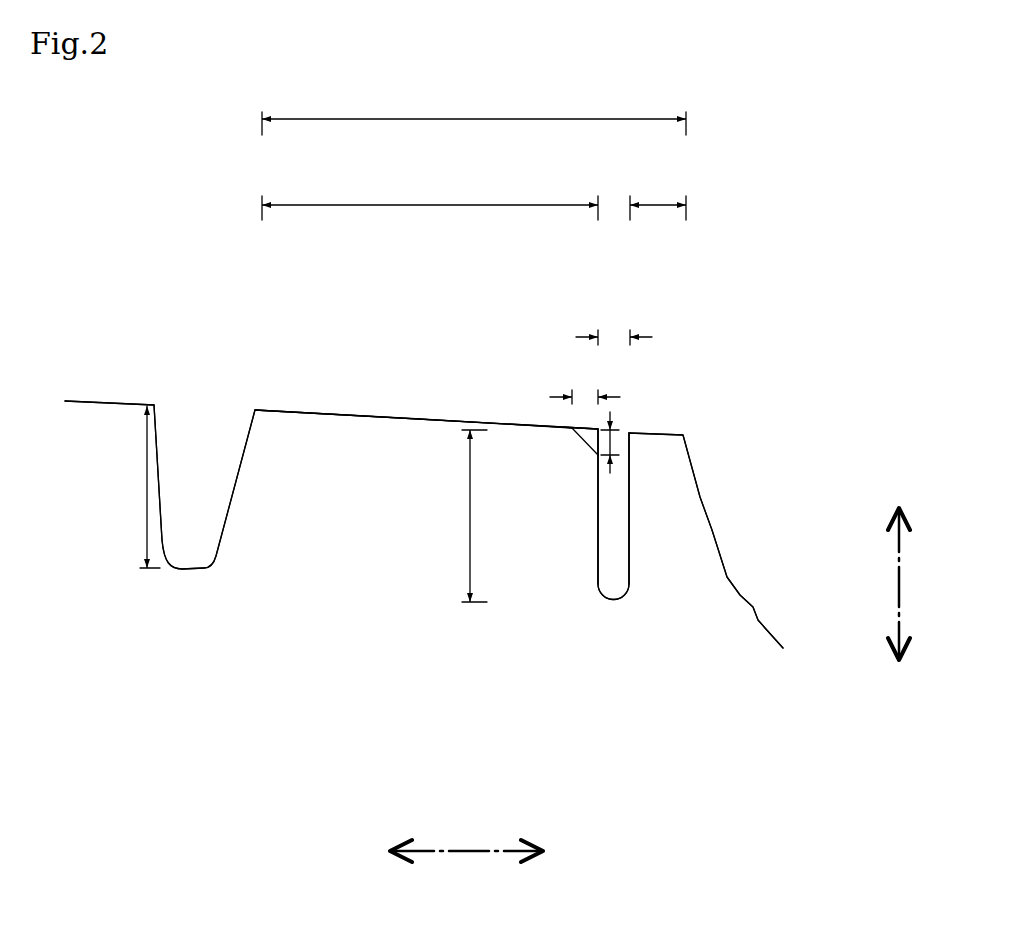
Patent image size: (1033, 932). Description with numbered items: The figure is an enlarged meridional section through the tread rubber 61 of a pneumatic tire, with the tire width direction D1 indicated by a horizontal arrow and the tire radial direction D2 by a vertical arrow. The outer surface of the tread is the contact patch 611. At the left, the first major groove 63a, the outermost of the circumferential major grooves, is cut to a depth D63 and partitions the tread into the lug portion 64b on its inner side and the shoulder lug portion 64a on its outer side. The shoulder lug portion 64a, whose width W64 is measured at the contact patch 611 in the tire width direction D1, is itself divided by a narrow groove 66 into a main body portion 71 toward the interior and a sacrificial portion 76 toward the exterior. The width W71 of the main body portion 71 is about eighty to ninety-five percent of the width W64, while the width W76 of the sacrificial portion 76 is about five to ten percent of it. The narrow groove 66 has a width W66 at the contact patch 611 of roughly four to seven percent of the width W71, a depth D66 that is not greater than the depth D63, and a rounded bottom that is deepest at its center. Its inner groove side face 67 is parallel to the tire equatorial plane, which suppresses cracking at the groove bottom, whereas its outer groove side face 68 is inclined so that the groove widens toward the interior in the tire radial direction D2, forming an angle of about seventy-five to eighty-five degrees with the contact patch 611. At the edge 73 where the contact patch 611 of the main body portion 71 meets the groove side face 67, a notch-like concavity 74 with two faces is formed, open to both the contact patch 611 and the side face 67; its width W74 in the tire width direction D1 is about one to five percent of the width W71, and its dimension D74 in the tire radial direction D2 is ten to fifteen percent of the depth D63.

The tread rubber 61 is at (148, 255).
The lug portion adjacent to shoulder lug portion 64b is at (103, 402).
The first major groove 63a is at (172, 572).
The main body portion 71 is at (292, 438).
The contact patch 611 is at (368, 417).
The shoulder lug portion 64a is at (447, 420).
The concavity 74 is at (577, 432).
The edge 73 is at (578, 433).
The narrow groove 66 is at (612, 602).
The groove side face at narrow groove 67 is at (595, 520).
The groove side face at narrow groove 68 is at (630, 520).
The sacrificial portion 76 is at (685, 492).
The width of shoulder lug portion W64 is at (474, 110).
The width of main body portion W71 is at (430, 195).
The width of sacrificial portion W76 is at (658, 195).
The width of narrow groove W66 is at (614, 320).
The width of concavity W74 is at (585, 381).
The dimension in tire radial direction of concavity D74 is at (612, 445).
The depth of first major groove D63 is at (122, 487).
The depth of narrow groove D66 is at (447, 516).
The tire width direction D1 is at (466, 868).
The tire radial direction D2 is at (918, 584).